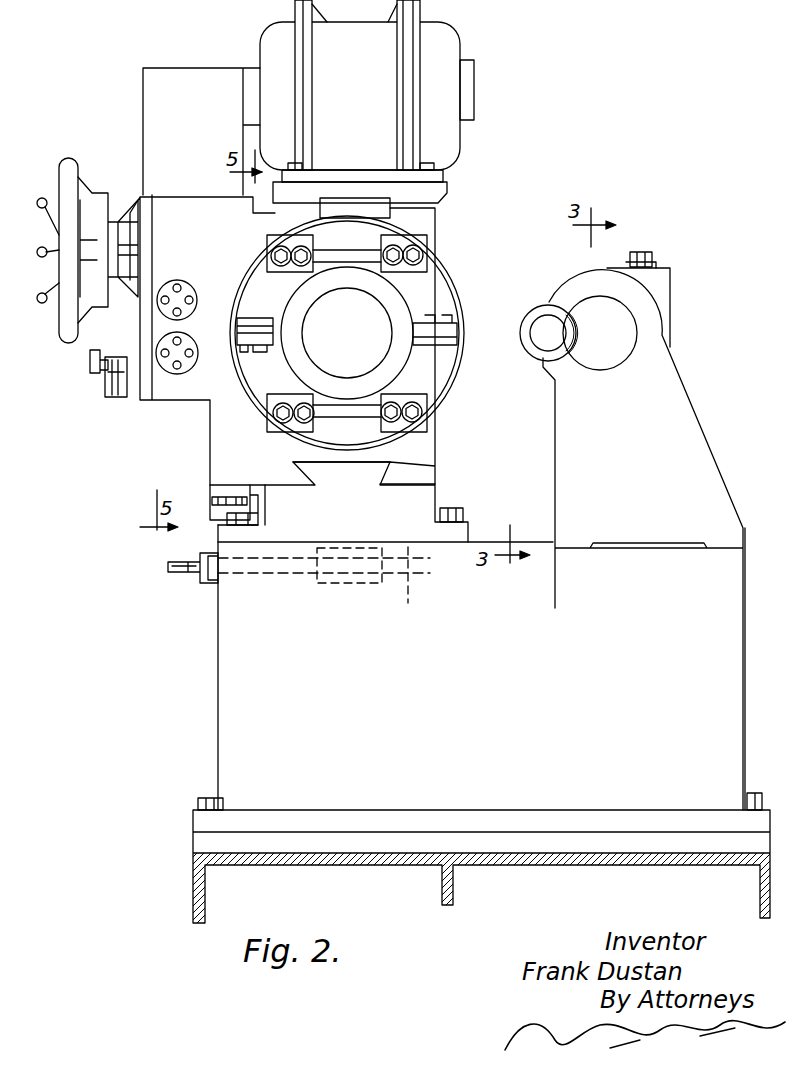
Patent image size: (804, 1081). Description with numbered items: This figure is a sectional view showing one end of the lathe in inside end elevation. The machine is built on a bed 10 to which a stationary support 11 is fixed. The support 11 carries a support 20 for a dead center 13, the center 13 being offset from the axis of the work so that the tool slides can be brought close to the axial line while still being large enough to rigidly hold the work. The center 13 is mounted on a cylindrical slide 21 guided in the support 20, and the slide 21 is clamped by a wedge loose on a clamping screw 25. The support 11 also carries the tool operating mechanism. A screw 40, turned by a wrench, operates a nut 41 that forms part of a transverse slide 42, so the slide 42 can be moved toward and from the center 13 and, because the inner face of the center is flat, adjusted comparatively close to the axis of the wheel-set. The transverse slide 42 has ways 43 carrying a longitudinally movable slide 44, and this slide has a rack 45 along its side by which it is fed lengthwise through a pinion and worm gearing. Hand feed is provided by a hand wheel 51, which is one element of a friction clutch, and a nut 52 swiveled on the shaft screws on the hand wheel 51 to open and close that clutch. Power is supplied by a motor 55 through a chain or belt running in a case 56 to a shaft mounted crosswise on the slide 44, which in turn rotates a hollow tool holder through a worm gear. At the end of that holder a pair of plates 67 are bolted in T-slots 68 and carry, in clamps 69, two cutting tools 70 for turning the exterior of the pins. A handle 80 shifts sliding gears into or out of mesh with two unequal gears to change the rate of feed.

The bed 10 is at (200, 878).
The support 11 is at (454, 705).
The dead center 13 is at (540, 337).
The support 20 is at (606, 468).
The cylindrical slide 21 is at (598, 352).
The clamping screw 25 is at (643, 248).
The screw 40 is at (268, 573).
The nut 41 is at (350, 583).
The transverse slide 42 is at (346, 531).
The ways 43 is at (433, 467).
The longitudinally movable slide 44 is at (432, 443).
The rack 45 is at (260, 500).
The hand wheel 51 is at (70, 167).
The nut 52 is at (52, 232).
The motor 55 is at (356, 90).
The case 56 is at (160, 113).
The plates 67 is at (270, 287).
The T-slots 68 is at (341, 252).
The clamps 69 is at (448, 327).
The cutting tools 70 is at (277, 328).
The handle 80 is at (112, 378).